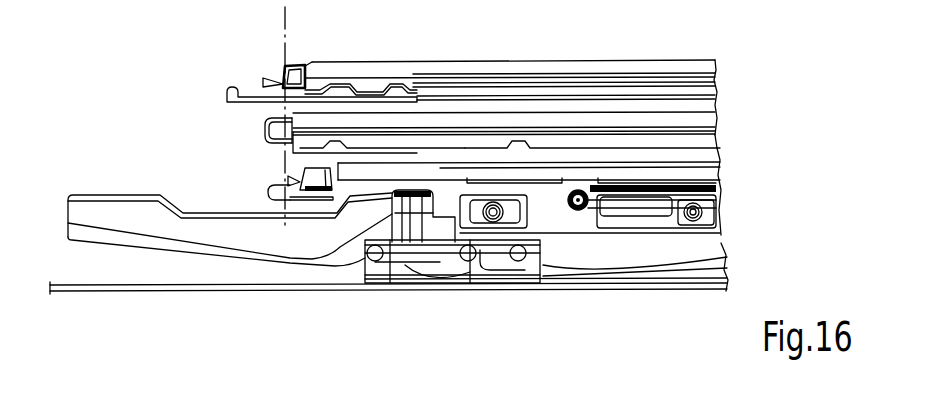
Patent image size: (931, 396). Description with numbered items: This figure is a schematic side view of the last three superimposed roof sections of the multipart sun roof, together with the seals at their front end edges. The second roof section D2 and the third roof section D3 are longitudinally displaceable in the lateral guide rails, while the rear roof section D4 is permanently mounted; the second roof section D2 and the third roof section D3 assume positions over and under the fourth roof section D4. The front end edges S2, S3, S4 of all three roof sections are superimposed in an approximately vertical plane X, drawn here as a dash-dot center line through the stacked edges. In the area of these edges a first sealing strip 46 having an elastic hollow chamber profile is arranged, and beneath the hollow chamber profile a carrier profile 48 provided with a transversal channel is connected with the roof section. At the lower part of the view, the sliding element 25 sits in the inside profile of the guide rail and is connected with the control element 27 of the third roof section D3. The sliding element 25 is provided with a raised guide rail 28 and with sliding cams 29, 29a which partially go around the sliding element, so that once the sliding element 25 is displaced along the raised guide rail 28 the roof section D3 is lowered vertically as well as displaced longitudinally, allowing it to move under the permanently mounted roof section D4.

The sliding element 25 is at (453, 283).
The control element 27 is at (96, 203).
The raised guide rail 28 is at (122, 233).
The sliding cam 29 is at (420, 195).
The sliding cam 29a is at (427, 190).
The first sealing strip 46 is at (297, 64).
The carrier profile 48 is at (228, 102).
The second roof section D2 is at (567, 67).
The third roof section D3 is at (708, 170).
The rear roof section D4 is at (708, 122).
The front end edge S2 is at (280, 63).
The front end edge S3 is at (262, 192).
The front end edge S4 is at (263, 141).
The vertical plane X is at (272, 125).